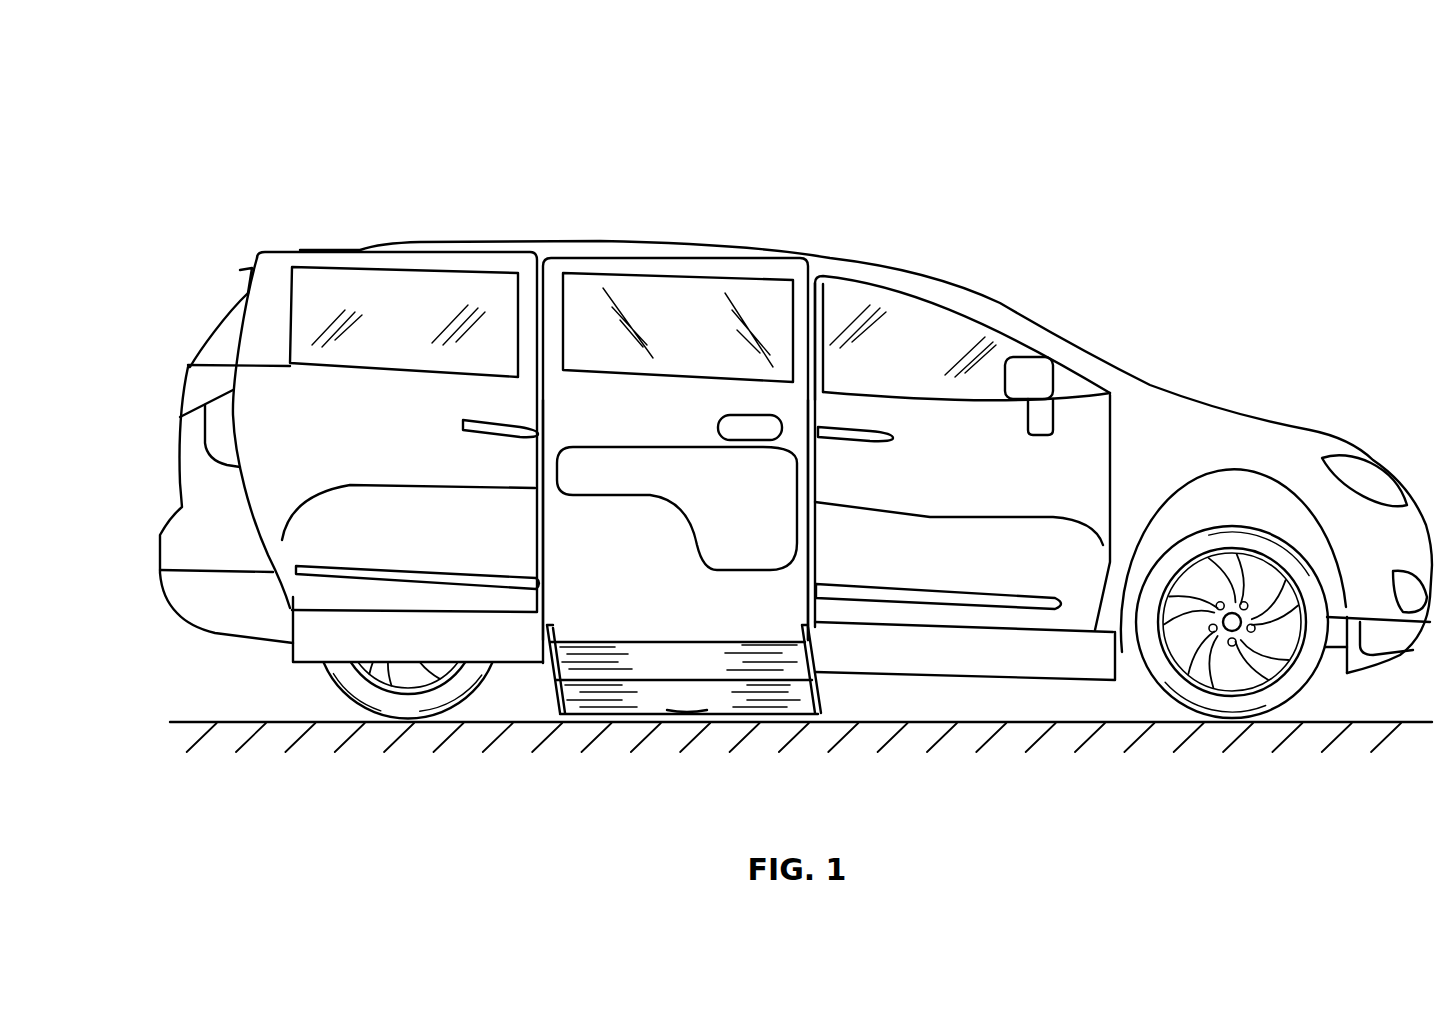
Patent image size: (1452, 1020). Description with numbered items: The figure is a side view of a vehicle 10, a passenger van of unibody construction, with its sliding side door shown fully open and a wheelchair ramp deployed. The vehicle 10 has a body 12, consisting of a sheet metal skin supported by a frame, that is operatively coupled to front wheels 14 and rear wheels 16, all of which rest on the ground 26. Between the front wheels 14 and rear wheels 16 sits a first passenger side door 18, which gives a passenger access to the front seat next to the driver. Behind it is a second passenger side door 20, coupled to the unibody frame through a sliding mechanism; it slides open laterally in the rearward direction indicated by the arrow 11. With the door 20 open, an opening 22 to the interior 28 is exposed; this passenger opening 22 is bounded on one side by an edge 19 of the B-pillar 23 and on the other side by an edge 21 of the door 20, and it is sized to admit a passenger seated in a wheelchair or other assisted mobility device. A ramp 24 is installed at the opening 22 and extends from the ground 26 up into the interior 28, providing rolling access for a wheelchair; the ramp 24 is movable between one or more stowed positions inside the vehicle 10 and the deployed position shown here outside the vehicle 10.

The vehicle 10 is at (1085, 152).
The arrow 11 is at (340, 98).
The body 12 is at (1238, 427).
The front wheels 14 is at (1222, 700).
The rear wheels 16 is at (424, 700).
The first passenger side door 18 is at (963, 615).
The edge of B-pillar 19 is at (803, 578).
The second passenger side door 20 is at (267, 394).
The edge of door 21 is at (548, 528).
The opening 22 is at (664, 303).
The B-pillar 23 is at (807, 340).
The ramp 24 is at (727, 700).
The ground 26 is at (228, 712).
The interior 28 is at (690, 428).